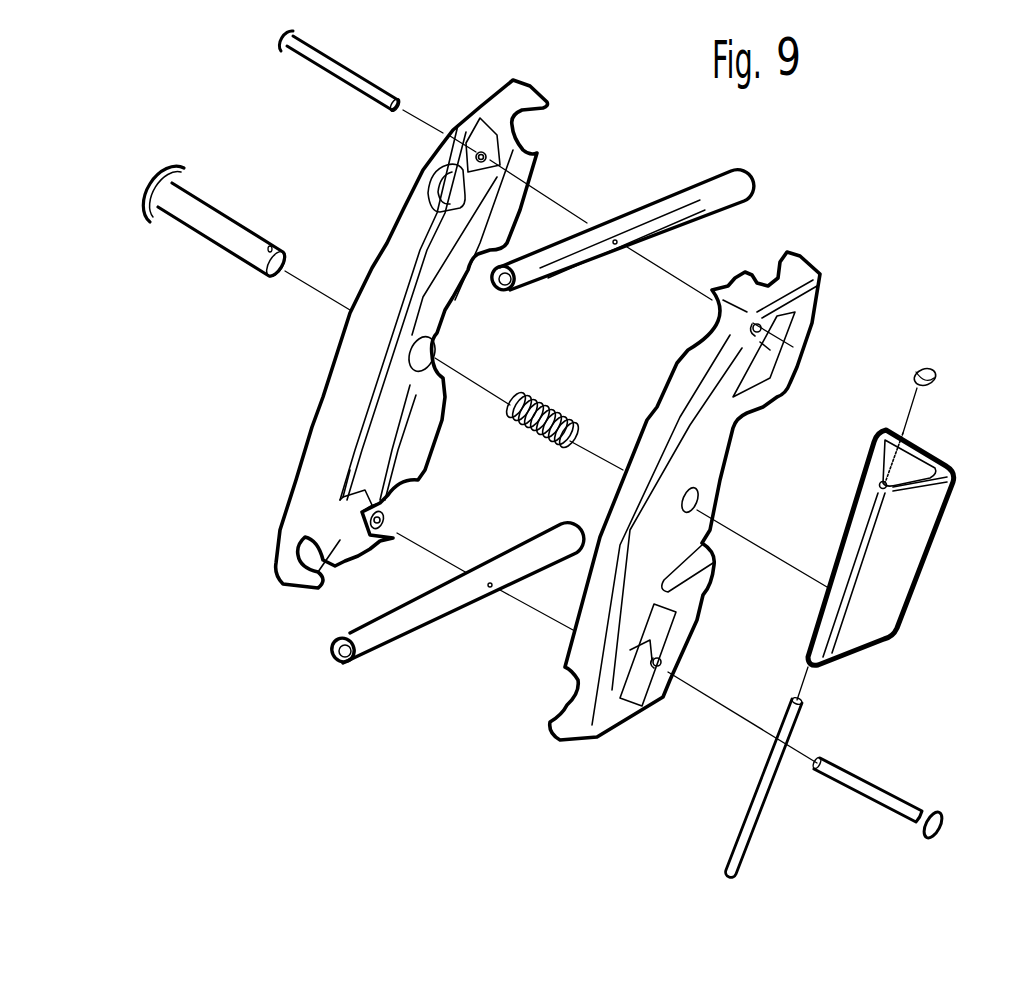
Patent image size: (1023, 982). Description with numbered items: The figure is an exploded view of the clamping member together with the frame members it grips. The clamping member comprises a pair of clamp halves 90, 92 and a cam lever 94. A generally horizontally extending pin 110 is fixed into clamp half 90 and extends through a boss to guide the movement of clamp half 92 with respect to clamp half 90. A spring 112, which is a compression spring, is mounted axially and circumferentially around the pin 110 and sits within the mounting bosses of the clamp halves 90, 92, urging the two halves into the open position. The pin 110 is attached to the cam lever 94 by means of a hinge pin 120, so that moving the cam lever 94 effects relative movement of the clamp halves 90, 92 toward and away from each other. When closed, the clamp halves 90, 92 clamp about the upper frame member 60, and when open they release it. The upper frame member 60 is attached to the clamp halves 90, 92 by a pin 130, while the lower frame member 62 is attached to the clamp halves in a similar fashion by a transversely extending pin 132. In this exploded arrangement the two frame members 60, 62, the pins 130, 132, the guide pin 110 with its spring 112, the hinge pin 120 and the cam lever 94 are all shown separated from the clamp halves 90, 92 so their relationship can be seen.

The pin 130 is at (343, 58).
The pin 110 is at (205, 243).
The upper frame member 60 is at (745, 190).
The spring 112 is at (546, 400).
The clamp half 90 is at (284, 535).
The lower frame member 62 is at (360, 662).
The clamp half 92 is at (598, 742).
The cam lever 94 is at (930, 550).
The pin 132 is at (895, 793).
The hinge pin 120 is at (757, 825).